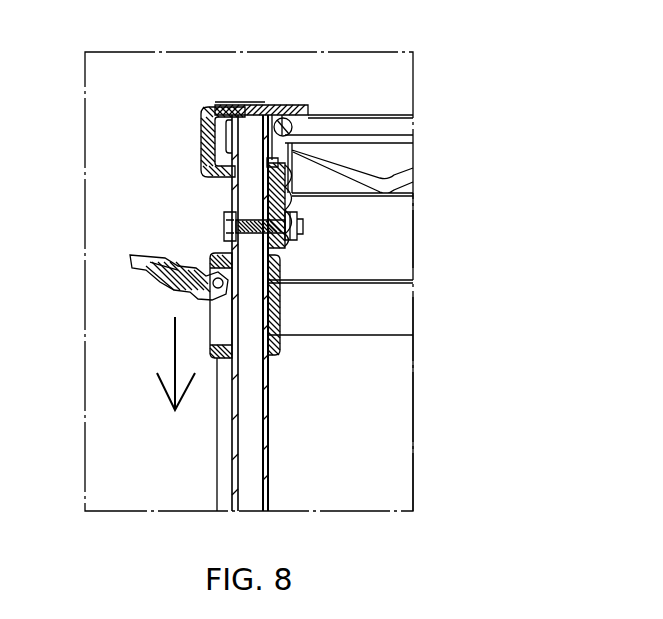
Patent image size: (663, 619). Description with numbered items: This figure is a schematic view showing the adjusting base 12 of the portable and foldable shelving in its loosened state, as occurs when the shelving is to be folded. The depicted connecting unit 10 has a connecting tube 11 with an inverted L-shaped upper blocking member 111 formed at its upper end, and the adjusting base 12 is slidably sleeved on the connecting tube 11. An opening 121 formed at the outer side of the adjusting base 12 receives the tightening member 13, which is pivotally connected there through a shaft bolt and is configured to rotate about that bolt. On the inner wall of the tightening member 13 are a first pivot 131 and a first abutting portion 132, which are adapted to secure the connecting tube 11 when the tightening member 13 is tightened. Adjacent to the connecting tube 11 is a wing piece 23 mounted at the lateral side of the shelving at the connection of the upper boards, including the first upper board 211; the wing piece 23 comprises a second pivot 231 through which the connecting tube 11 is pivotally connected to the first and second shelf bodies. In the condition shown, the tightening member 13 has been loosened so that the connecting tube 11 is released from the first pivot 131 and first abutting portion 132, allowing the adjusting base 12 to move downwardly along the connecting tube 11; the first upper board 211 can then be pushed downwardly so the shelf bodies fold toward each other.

The connecting unit 10 is at (155, 337).
The connecting tube 11 is at (253, 422).
The upper blocking member 111 is at (280, 112).
The adjusting base 12 is at (210, 254).
The opening 121 is at (215, 362).
The tightening member 13 is at (132, 258).
The first pivot 131 is at (268, 300).
The first abutting portion 132 is at (190, 290).
The first upper board 211 is at (360, 143).
The wing piece 23 is at (268, 184).
The second pivot 231 is at (305, 224).